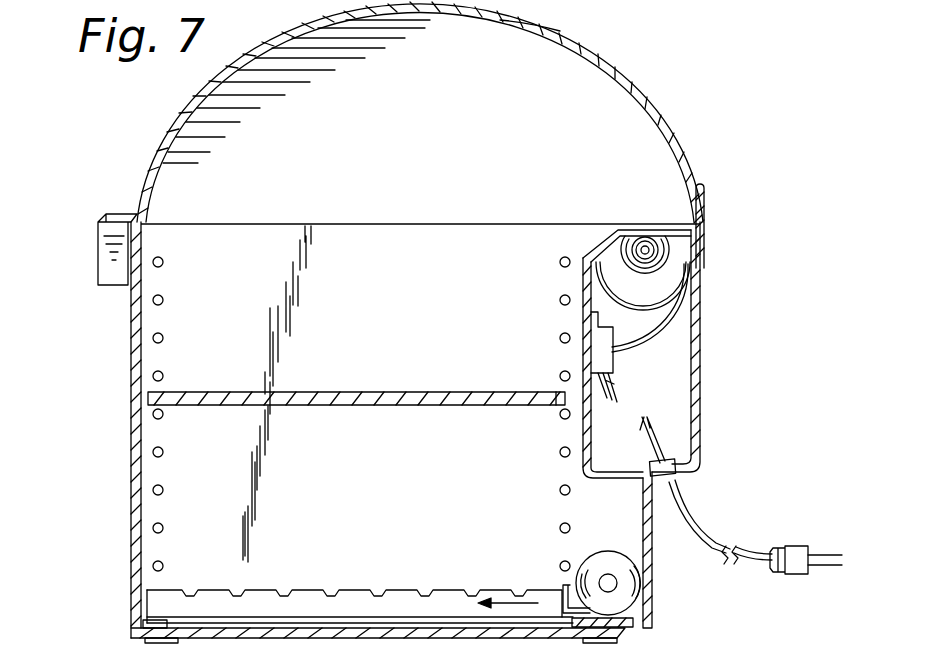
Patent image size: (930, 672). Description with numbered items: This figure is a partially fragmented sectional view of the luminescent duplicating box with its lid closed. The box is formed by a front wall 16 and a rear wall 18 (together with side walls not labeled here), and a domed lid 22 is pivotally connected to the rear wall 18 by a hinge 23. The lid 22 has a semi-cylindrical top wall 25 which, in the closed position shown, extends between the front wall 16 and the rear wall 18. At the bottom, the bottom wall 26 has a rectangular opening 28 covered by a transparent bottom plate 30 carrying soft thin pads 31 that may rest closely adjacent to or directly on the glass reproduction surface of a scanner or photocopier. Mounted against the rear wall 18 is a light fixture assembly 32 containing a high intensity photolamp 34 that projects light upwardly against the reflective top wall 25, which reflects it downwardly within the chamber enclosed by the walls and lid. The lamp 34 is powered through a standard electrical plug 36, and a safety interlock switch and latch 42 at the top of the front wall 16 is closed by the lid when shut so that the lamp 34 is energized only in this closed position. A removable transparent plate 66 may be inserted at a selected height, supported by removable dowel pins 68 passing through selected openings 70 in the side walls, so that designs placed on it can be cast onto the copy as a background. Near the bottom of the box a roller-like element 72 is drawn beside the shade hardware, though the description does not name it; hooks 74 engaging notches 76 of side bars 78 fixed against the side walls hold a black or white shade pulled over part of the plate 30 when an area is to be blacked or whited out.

The front wall 16 is at (132, 392).
The rear wall 18 is at (702, 338).
The domed lid 22 is at (618, 58).
The hinge 23 is at (707, 248).
The semi-cylindrical top wall 25 is at (514, 36).
The bottom wall 26 is at (645, 628).
The rectangular opening 28 is at (553, 638).
The transparent bottom plate 30 is at (330, 632).
The soft thin pads 31 is at (160, 642).
The light fixture assembly 32 is at (583, 300).
The high intensity photolamp 34 is at (645, 246).
The plug 36 is at (789, 547).
The safety interlock switch and latch 42 is at (98, 242).
The removable transparent plate 66 is at (442, 392).
The removable dowel pins 68 is at (564, 408).
The openings 70 is at (558, 492).
The roller 72 is at (628, 552).
The hooks 74 is at (565, 590).
The notches 76 is at (376, 590).
The side bars 78 is at (313, 568).